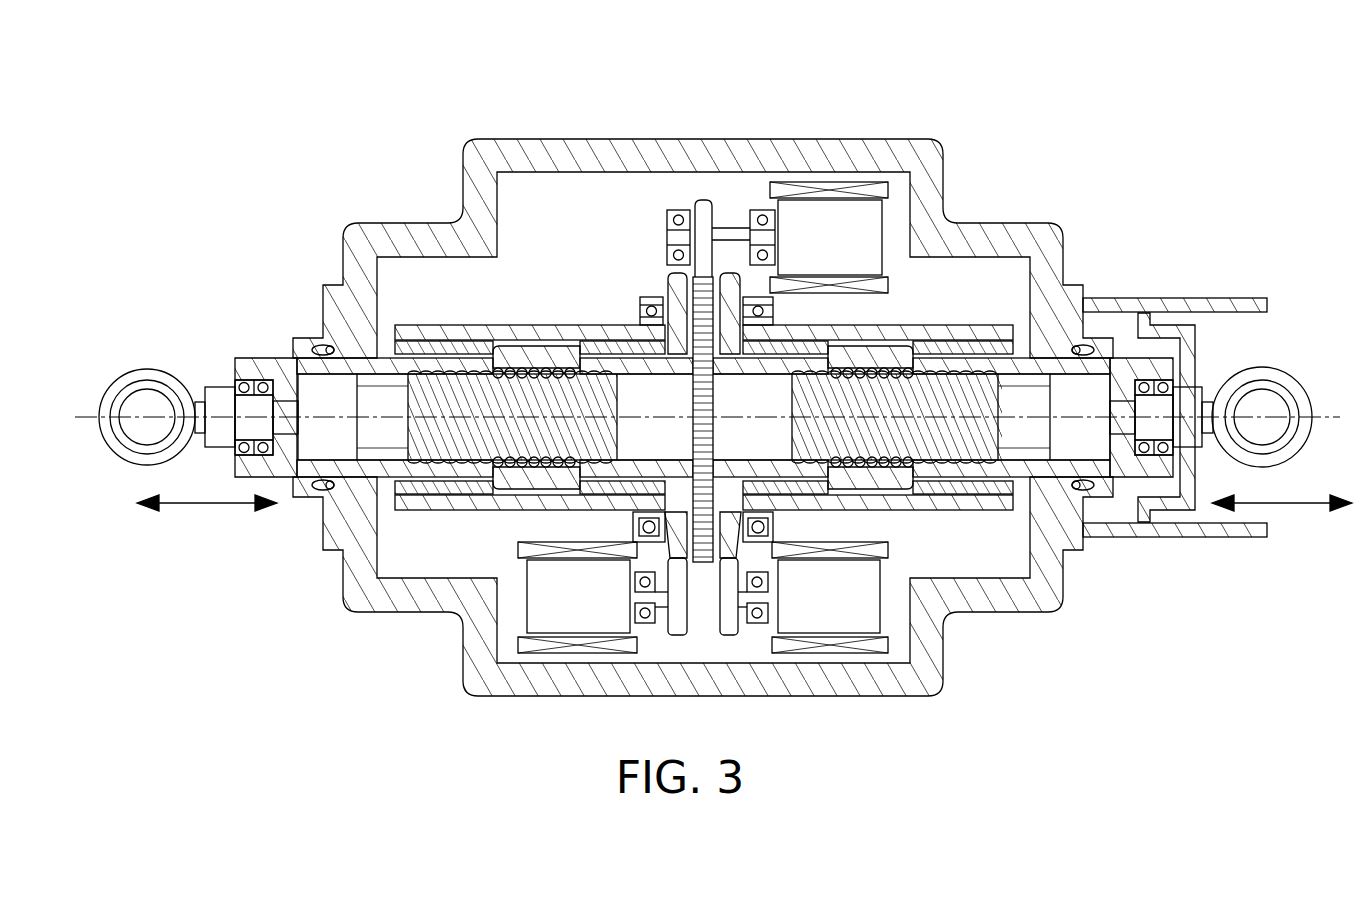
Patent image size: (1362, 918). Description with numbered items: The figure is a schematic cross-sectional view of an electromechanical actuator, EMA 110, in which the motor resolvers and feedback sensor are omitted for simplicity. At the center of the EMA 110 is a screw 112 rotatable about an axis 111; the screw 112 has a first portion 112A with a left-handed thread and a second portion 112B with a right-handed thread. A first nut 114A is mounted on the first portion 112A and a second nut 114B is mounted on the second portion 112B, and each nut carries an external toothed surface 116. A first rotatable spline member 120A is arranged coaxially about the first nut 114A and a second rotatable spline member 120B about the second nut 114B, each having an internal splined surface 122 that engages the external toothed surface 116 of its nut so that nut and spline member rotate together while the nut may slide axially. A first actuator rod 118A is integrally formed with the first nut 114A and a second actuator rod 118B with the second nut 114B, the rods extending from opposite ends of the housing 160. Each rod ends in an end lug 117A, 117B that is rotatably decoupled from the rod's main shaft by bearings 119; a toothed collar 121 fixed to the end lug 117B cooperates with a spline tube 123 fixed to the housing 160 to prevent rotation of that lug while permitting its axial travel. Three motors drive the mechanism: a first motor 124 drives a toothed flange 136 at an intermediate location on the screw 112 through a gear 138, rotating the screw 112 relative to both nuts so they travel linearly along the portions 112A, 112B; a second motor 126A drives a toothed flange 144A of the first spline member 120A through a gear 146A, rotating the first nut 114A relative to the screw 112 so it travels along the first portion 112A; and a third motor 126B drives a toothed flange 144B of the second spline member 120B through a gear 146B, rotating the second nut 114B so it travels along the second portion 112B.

The EMA 110 is at (1108, 172).
The axis 111 is at (310, 415).
The screw 112 is at (649, 444).
The first portion 112A is at (568, 388).
The second portion 112B is at (840, 390).
The first nut 114A is at (555, 358).
The second nut 114B is at (870, 360).
The external toothed surface 116 is at (530, 335).
The end lug 117A is at (112, 382).
The end lug 117B is at (1312, 397).
The first actuator rod 118A is at (235, 370).
The second actuator rod 118B is at (1204, 375).
The bearings 119 is at (240, 450).
The first rotatable spline member 120A is at (475, 512).
The second rotatable spline member 120B is at (933, 512).
The toothed collar 121 is at (1168, 326).
The splined surface 122 is at (447, 350).
The spline tube 123 is at (1207, 300).
The first motor 124 is at (810, 247).
The second motor 126A is at (549, 611).
The third motor 126B is at (802, 611).
The toothed flange 136 is at (698, 478).
The gear 138 is at (698, 202).
The toothed flange 144A is at (637, 537).
The toothed flange 144B is at (768, 537).
The gear 146A is at (672, 625).
The gear 146B is at (730, 625).
The housing 160 is at (512, 139).